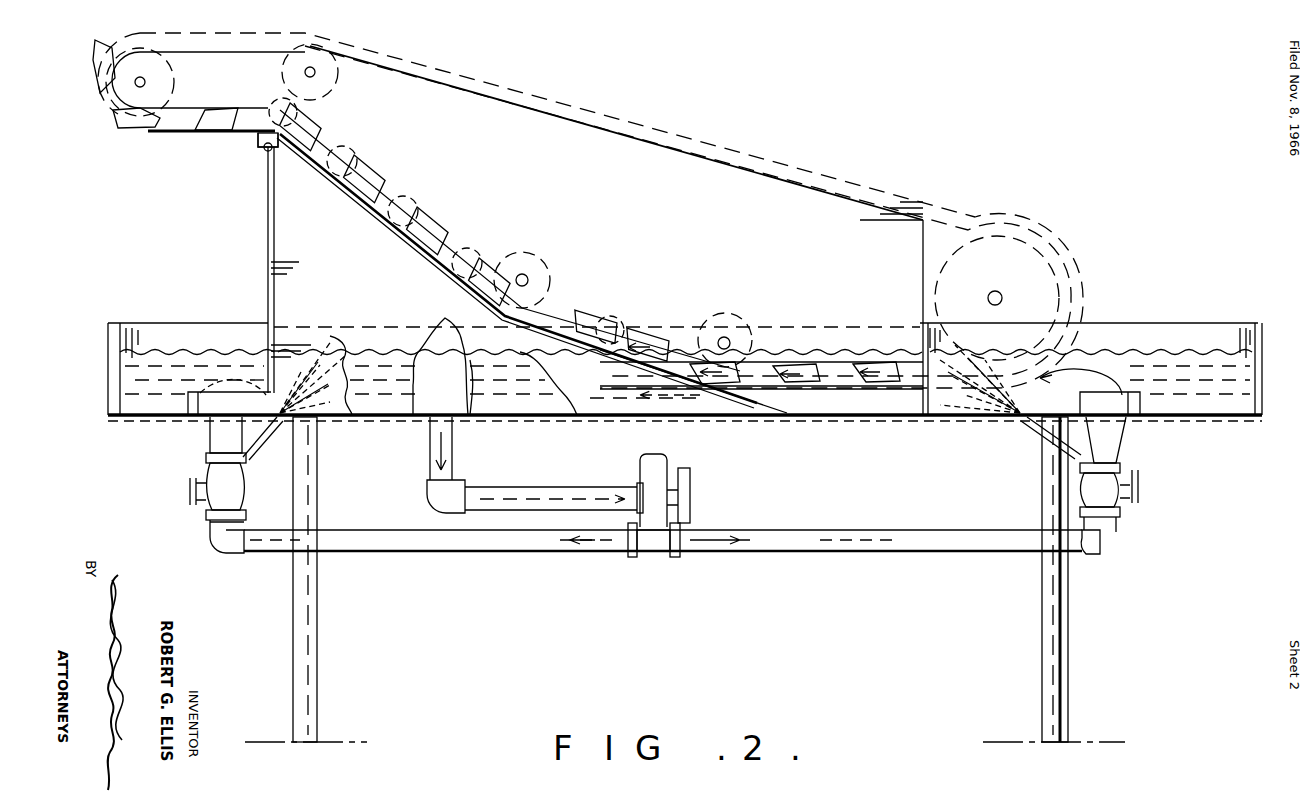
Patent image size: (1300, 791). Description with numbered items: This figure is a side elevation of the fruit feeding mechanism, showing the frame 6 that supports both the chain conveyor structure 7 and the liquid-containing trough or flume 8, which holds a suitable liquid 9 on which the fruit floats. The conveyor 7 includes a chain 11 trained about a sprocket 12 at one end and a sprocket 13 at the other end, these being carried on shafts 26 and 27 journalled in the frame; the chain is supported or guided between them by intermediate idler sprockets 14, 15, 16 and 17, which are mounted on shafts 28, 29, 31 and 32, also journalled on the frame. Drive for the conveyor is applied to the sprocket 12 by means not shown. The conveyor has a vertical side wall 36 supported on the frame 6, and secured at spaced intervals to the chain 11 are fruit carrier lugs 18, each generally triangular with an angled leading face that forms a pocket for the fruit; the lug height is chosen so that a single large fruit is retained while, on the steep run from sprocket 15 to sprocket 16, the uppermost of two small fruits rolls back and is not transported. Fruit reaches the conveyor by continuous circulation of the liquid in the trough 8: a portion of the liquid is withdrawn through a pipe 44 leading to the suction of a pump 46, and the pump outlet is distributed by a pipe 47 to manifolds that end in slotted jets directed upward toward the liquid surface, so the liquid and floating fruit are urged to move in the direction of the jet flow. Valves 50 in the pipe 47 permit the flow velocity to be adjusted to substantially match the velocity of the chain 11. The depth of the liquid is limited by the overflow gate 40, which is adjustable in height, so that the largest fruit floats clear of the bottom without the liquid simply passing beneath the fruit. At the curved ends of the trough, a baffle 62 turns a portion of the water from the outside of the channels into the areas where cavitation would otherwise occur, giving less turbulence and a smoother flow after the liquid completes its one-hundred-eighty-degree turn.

The frame 6 is at (1078, 631).
The chain conveyor structure 7 is at (718, 125).
The trough 8 is at (1255, 375).
The liquid 9 is at (136, 388).
The chain 11 is at (170, 124).
The sprocket 12 is at (173, 62).
The sprocket 13 is at (947, 246).
The idler sprocket 14 is at (740, 323).
The idler sprocket 15 is at (524, 250).
The idler sprocket 16 is at (262, 142).
The idler sprocket 17 is at (326, 99).
The fruit carrier lug 18 is at (379, 184).
The shaft 26 is at (145, 83).
The shaft 27 is at (997, 294).
The shaft 28 is at (724, 332).
The shaft 29 is at (527, 278).
The shaft 31 is at (265, 152).
The shaft 32 is at (318, 74).
The vertical side wall 36 is at (726, 248).
The overflow gate 40 is at (432, 347).
The pipe 44 is at (455, 463).
The pump 46 is at (663, 456).
The pipe 47 is at (490, 553).
The valve 50 is at (207, 500).
The baffle 62 is at (188, 406).